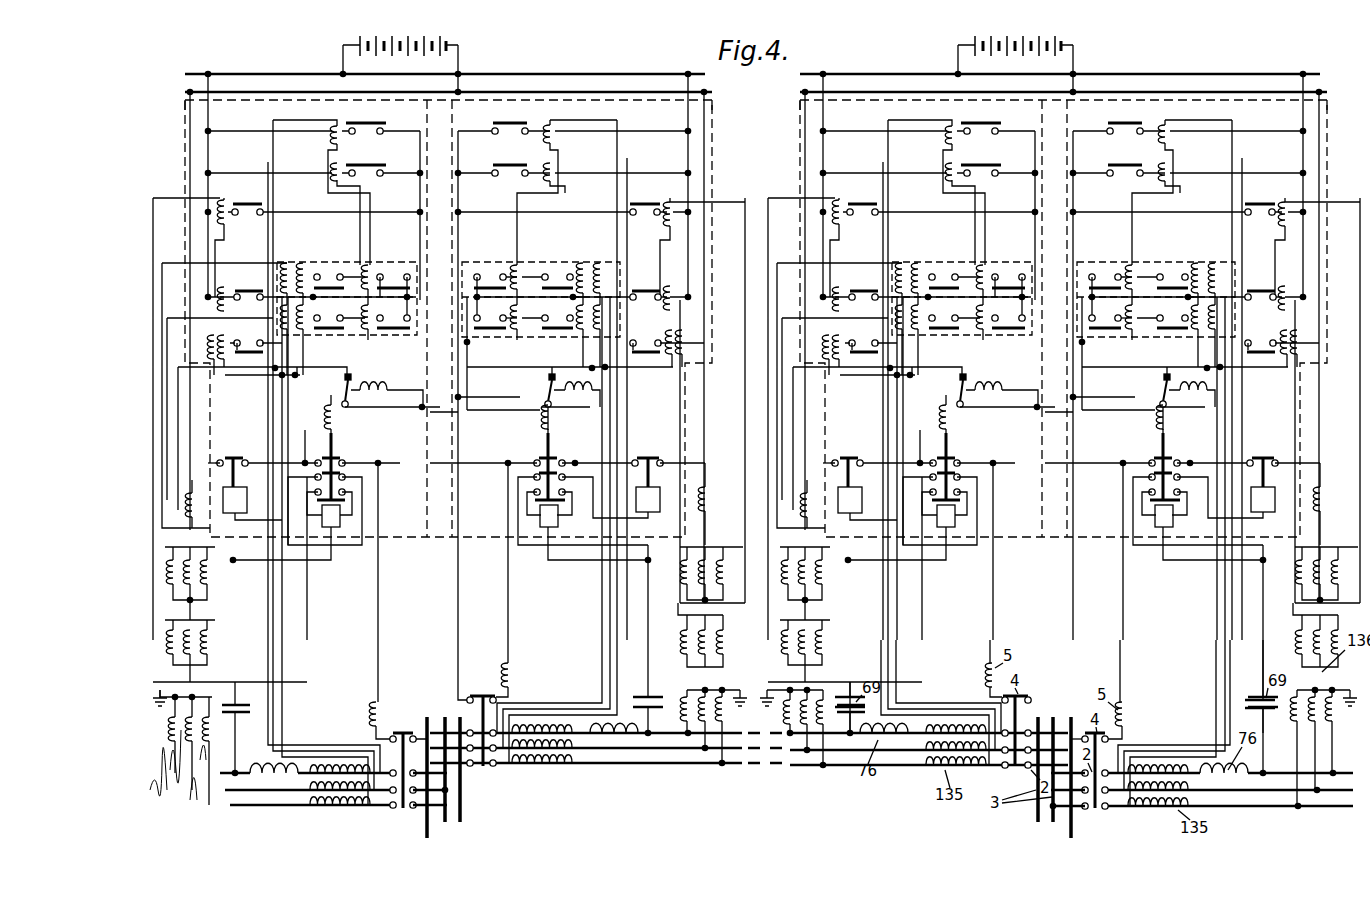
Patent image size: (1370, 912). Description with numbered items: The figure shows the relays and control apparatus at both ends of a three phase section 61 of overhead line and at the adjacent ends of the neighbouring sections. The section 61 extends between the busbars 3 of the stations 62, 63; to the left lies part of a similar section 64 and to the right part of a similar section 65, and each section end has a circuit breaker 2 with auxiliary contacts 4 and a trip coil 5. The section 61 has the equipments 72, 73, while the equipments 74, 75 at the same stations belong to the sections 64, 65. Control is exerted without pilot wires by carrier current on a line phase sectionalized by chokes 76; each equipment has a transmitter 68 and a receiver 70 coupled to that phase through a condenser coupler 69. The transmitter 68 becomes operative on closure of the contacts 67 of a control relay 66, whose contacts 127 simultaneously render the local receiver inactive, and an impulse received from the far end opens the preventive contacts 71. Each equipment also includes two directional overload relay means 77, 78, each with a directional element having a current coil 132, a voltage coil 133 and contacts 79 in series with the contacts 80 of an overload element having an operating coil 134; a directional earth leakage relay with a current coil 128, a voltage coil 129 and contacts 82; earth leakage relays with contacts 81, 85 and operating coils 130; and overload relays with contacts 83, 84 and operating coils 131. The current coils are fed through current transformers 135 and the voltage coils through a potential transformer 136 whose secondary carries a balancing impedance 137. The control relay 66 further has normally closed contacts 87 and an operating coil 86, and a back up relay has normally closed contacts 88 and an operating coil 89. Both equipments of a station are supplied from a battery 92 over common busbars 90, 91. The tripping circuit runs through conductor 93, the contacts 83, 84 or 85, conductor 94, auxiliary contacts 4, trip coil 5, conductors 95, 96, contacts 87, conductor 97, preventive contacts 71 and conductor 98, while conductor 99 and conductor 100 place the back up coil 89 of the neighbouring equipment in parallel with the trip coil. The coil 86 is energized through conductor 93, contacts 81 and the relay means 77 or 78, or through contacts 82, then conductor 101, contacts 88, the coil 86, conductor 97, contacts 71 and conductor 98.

The circuit breaker 2 is at (404, 808).
The busbars 3 is at (448, 804).
The auxiliary contacts 4 is at (404, 732).
The trip coil 5 is at (380, 705).
The three phase section 61 is at (742, 748).
The station 62 is at (443, 780).
The station 63 is at (1054, 780).
The section 64 is at (274, 794).
The section 65 is at (1354, 810).
The control relay 66 is at (334, 440).
The contacts 67 is at (346, 500).
The transmitter 68 is at (340, 520).
The condenser coupler 69 is at (240, 705).
The receiver 70 is at (247, 498).
The preventive contacts 71 is at (228, 459).
The equipment 72 is at (712, 180).
The equipment 73 is at (800, 174).
The equipment 74 is at (185, 170).
The equipment 75 is at (1328, 176).
The choke 76 is at (266, 770).
The directional overload relay means 77 is at (410, 268).
The directional overload relay means 78 is at (462, 304).
The contacts 79 is at (340, 272).
The contacts 80 is at (461, 264).
The contacts 81 is at (640, 291).
The contacts 82 is at (250, 356).
The contacts 83 is at (372, 122).
The contacts 84 is at (366, 167).
The contacts 85 is at (268, 203).
The operating coil 86 is at (326, 419).
The normally closed contacts 87 is at (306, 458).
The normally closed contacts 88 is at (345, 382).
The operating coil 89 is at (388, 390).
The busbar 90 is at (498, 74).
The busbar 91 is at (528, 91).
The battery 92 is at (455, 46).
The conductor 93 is at (209, 166).
The conductor 94 is at (436, 152).
The conductor 95 is at (379, 655).
The conductor 96 is at (382, 463).
The conductor 97 is at (258, 462).
The conductor 98 is at (191, 158).
The conductor 99 is at (455, 396).
The conductor 100 is at (456, 420).
The conductor 101 is at (376, 368).
The contacts 127 is at (344, 460).
The current coil 128 is at (467, 335).
The voltage coil 129 is at (218, 362).
The operating coil 130 is at (232, 206).
The operating coil 131 is at (343, 143).
The current coil 132 is at (305, 262).
The voltage coil 133 is at (288, 262).
The operating coil 134 is at (372, 267).
The current transformers 135 is at (322, 768).
The potential transformer 136 is at (200, 673).
The balancing impedance 137 is at (192, 492).